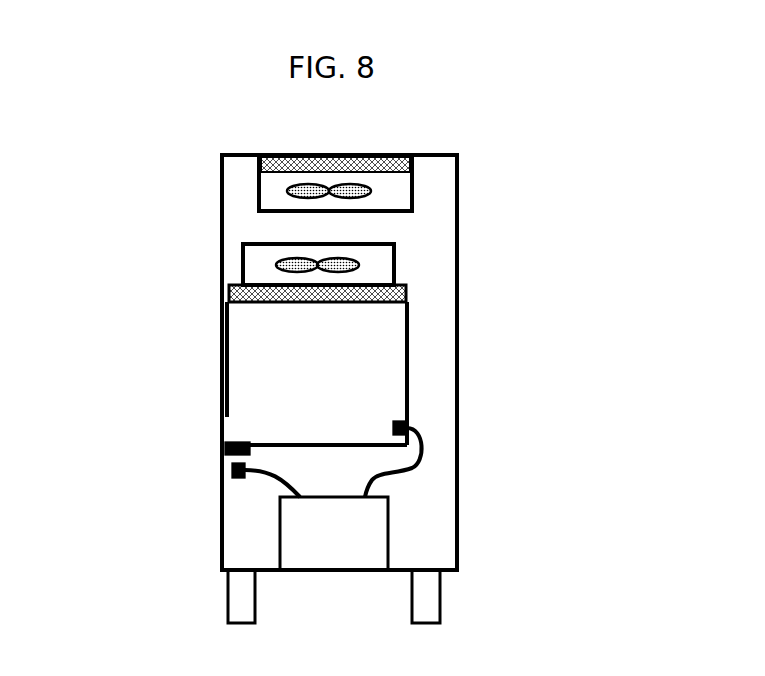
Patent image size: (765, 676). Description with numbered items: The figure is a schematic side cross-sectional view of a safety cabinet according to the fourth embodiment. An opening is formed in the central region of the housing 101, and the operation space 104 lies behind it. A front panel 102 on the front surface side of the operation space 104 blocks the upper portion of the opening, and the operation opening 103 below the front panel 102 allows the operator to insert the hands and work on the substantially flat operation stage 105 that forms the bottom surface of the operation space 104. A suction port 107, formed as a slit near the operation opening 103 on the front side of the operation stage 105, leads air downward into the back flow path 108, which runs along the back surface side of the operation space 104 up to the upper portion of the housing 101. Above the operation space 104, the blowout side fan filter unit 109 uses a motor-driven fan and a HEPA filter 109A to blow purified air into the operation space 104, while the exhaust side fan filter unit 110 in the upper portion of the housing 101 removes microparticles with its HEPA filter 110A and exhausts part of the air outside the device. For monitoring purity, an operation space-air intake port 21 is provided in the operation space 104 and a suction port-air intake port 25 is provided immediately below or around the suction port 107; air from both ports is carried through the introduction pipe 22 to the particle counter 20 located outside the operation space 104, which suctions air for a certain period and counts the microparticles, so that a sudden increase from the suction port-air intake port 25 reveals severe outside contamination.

The housing 101 is at (432, 154).
The front panel 102 is at (226, 360).
The operation opening 103 is at (226, 427).
The operation space 104 is at (358, 368).
The operation stage 105 is at (334, 443).
The suction port 107 is at (224, 444).
The back flow path 108 is at (432, 372).
The blowout side fan filter unit 109 is at (395, 258).
The HEPA filter 109A is at (407, 286).
The exhaust side fan filter unit 110 is at (258, 193).
The HEPA filter 110A is at (262, 157).
The particle counter 20 is at (388, 528).
The operation space-air intake port 21 is at (407, 425).
The introduction pipe 22 is at (283, 480).
The suction port-air intake port 25 is at (232, 471).